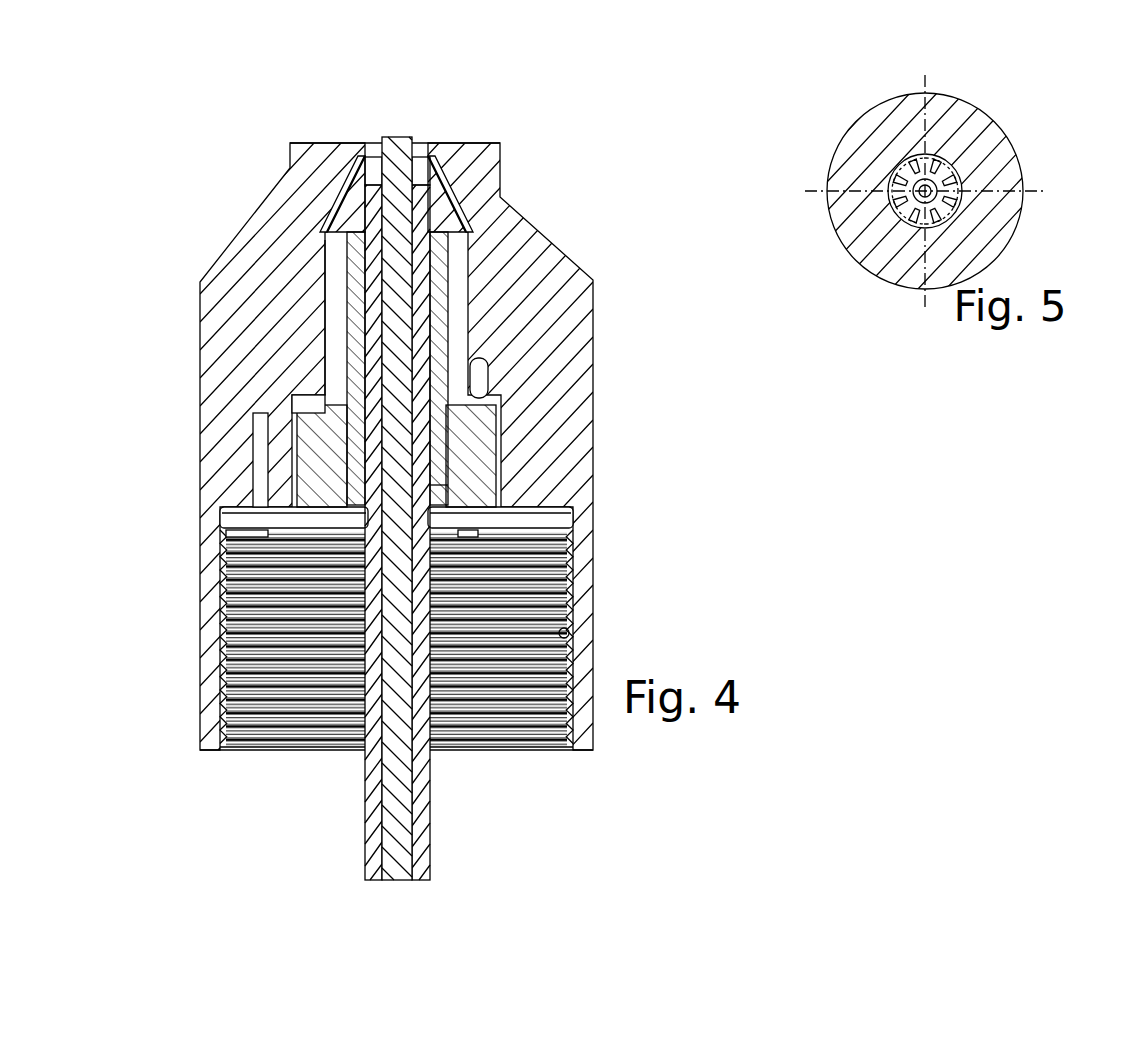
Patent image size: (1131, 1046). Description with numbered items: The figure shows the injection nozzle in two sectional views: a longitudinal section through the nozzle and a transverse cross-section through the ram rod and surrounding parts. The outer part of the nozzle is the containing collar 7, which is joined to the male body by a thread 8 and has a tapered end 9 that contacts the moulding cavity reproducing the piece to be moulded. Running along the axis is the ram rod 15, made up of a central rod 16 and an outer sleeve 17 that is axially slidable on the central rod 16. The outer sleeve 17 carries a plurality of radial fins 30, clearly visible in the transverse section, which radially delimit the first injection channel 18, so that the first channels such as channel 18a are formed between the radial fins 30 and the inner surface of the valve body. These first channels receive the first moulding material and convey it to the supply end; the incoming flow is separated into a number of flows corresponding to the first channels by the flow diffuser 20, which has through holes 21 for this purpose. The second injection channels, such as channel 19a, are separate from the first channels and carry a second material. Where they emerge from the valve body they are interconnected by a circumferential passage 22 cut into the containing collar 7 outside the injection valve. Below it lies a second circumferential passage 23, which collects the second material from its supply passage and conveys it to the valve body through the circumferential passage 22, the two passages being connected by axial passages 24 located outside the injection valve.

In FIG. 4, the containing collar 7 is at (595, 292).
In FIG. 5, the containing collar 7 is at (907, 286).
In FIG. 4, the thread 8 is at (570, 637).
In FIG. 4, the tapered end 9 is at (499, 151).
In FIG. 4, the ram rod 15 is at (398, 378).
In FIG. 5, the ram rod 15 is at (906, 178).
In FIG. 4, the central rod 16 is at (402, 487).
In FIG. 5, the central rod 16 is at (950, 150).
In FIG. 4, the outer sleeve 17 is at (432, 416).
In FIG. 5, the outer sleeve 17 is at (945, 190).
In FIG. 4, the first injection channel 18 is at (440, 300).
In FIG. 4, the first injection channel 18a is at (435, 458).
In FIG. 4, the second injection channel 19a is at (330, 232).
In FIG. 4, the flow diffuser 20 is at (218, 597).
In FIG. 4, the through holes 21 is at (480, 527).
In FIG. 4, the circumferential passage 22 is at (305, 372).
In FIG. 4, the second circumferential passage 23 is at (232, 518).
In FIG. 4, the axial passages 24 is at (258, 453).
In FIG. 4, the radial fins 30 is at (360, 293).
In FIG. 5, the radial fins 30 is at (963, 200).